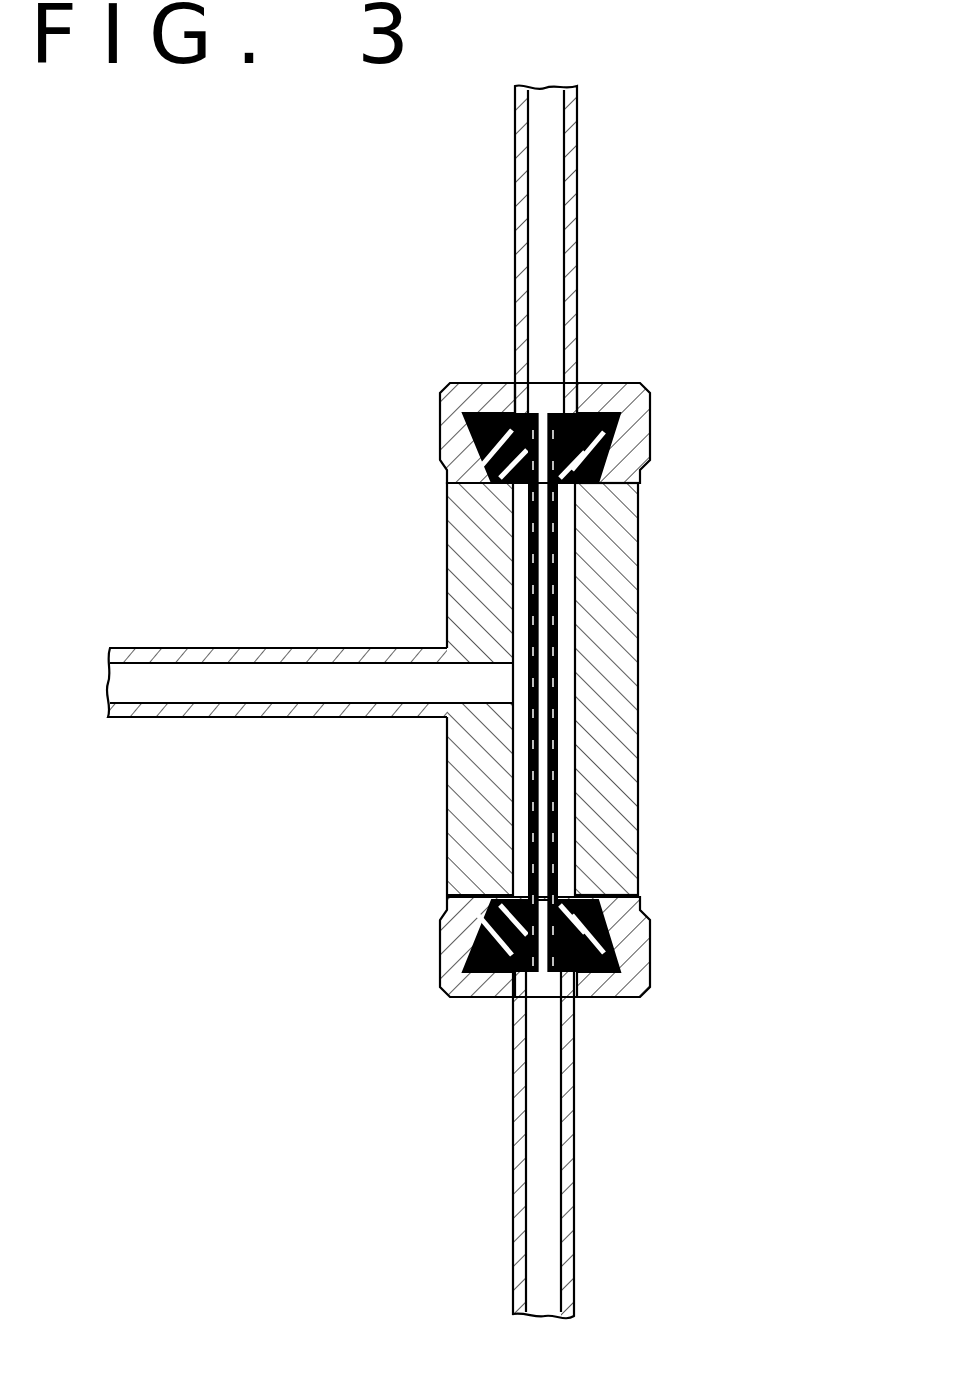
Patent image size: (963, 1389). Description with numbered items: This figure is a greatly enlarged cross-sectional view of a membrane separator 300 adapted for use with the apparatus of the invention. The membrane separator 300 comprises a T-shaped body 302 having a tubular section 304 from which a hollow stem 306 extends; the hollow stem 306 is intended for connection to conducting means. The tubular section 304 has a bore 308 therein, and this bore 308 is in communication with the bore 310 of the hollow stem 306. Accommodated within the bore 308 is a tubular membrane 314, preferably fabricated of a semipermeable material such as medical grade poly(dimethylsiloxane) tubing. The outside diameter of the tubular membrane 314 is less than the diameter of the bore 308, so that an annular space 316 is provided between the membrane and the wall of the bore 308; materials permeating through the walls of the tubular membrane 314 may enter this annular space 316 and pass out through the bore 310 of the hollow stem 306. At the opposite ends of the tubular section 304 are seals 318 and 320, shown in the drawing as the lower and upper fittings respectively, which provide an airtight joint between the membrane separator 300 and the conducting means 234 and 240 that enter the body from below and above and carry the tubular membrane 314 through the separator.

The membrane separator 300 is at (705, 702).
The conducting means 240 is at (578, 302).
The conducting means 234 is at (513, 1068).
The hollow stem 306 is at (183, 648).
The bore 310 is at (317, 685).
The T-shaped body 302 is at (640, 857).
The bore 308 is at (515, 585).
The tubular section 304 is at (613, 628).
The seal 320 is at (648, 455).
The seal 318 is at (595, 972).
The annular space 316 is at (565, 567).
The tubular membrane 314 is at (552, 773).